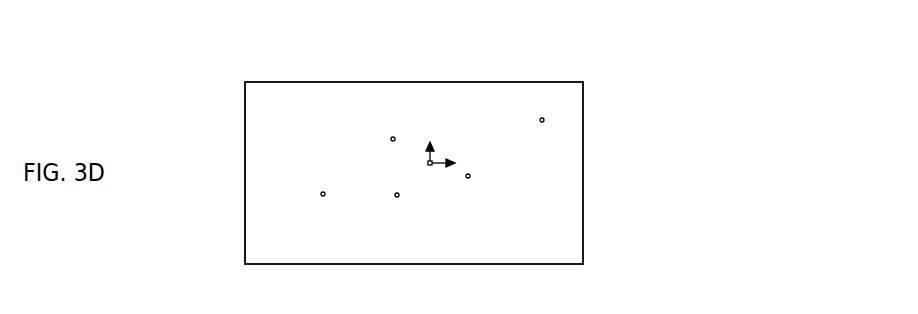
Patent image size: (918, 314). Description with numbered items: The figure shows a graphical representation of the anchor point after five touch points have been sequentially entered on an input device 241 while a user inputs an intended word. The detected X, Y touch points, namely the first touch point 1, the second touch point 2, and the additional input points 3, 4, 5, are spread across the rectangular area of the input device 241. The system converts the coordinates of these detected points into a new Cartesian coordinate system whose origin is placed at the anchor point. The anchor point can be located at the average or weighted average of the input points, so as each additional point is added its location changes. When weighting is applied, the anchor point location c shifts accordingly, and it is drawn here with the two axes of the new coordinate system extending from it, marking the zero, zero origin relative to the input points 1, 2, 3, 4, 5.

The input device 241 is at (263, 93).
The first touch point 1 is at (325, 192).
The second touch point 2 is at (470, 174).
The third input point 3 is at (395, 137).
The fourth input point 4 is at (544, 118).
The fifth input point 5 is at (399, 197).
The anchor point location c is at (440, 154).